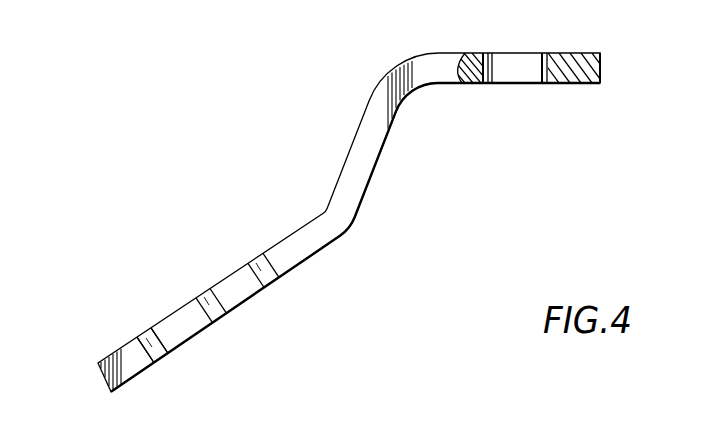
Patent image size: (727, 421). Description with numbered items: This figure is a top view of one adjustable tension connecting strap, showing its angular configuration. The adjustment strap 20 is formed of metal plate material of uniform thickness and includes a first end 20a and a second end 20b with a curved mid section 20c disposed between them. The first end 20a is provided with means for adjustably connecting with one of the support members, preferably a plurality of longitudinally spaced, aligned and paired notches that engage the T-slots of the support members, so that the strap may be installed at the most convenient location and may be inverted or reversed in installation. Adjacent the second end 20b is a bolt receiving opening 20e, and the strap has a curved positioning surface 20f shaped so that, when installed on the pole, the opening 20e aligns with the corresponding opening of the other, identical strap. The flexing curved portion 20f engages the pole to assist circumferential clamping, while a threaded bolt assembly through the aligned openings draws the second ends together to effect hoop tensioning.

The tension adjustment strap 20 is at (345, 208).
The first end 20a is at (101, 372).
The second end 20b is at (602, 69).
The curved mid section 20c is at (143, 338).
The bolt receiving opening 20e is at (541, 64).
The curved positioning surface 20f is at (392, 73).